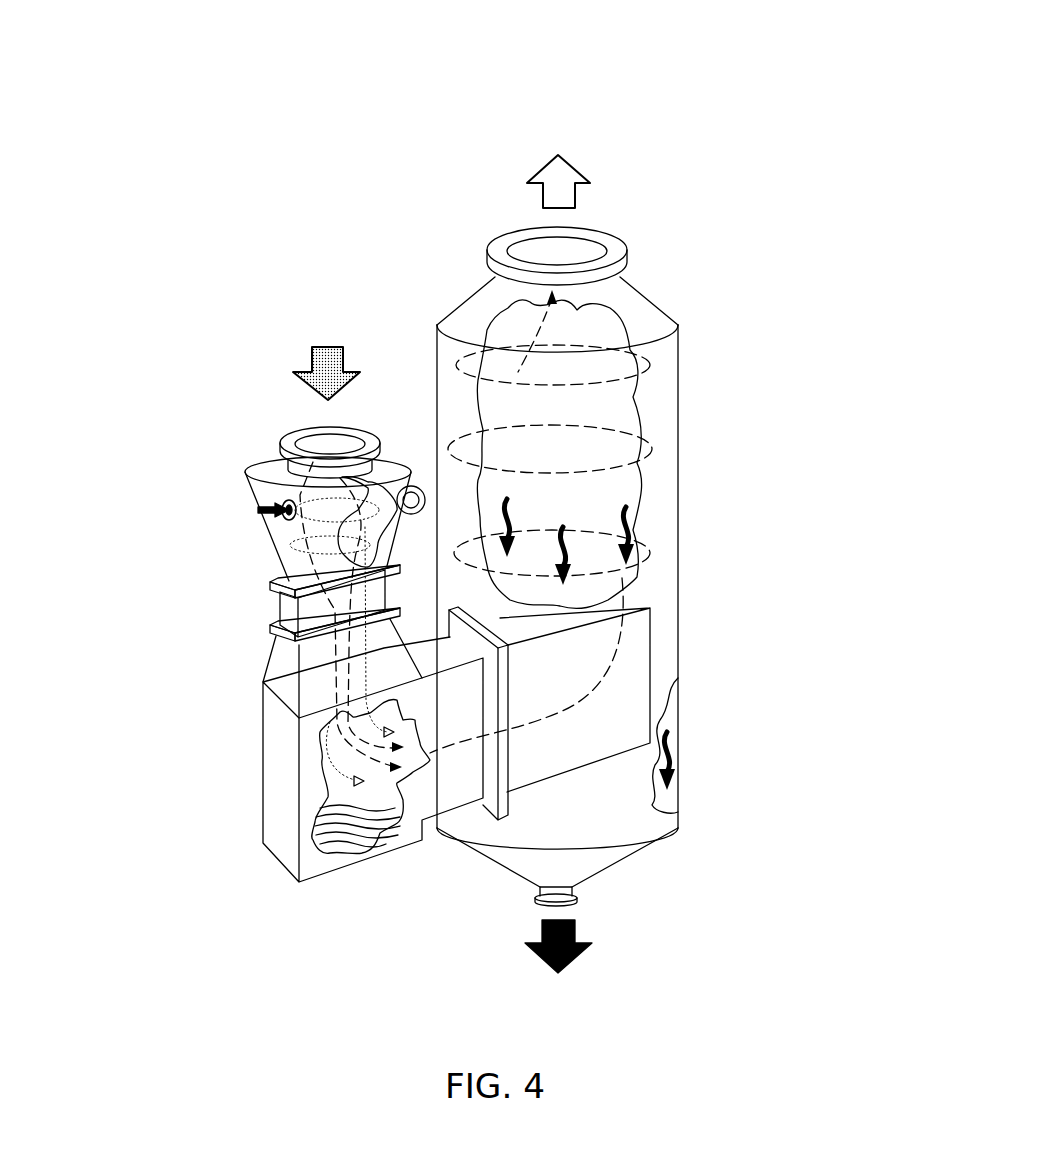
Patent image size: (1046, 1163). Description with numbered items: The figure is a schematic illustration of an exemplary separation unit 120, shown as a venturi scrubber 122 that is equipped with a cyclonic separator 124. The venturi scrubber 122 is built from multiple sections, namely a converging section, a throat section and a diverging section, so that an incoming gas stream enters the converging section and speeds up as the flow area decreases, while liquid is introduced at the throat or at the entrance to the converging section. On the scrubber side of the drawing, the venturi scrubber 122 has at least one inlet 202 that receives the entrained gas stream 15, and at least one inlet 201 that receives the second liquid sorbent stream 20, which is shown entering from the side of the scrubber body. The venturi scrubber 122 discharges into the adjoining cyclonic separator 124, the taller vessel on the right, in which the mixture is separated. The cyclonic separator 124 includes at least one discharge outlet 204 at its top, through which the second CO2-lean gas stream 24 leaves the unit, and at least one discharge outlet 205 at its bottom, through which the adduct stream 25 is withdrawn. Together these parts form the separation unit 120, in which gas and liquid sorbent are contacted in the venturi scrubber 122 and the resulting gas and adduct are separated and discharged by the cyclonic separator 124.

The separation unit 120 is at (737, 58).
The cyclonic separator 124 is at (745, 232).
The venturi scrubber 122 is at (148, 443).
The discharge outlet 204 is at (612, 243).
The discharge outlet 205 is at (577, 890).
The inlet 202 is at (286, 440).
The inlet 201 is at (283, 500).
The second liquid sorbent stream 20 is at (268, 519).
The entrained gas stream 15 is at (327, 345).
The second CO2-lean gas stream 24 is at (535, 172).
The adduct stream 25 is at (580, 955).